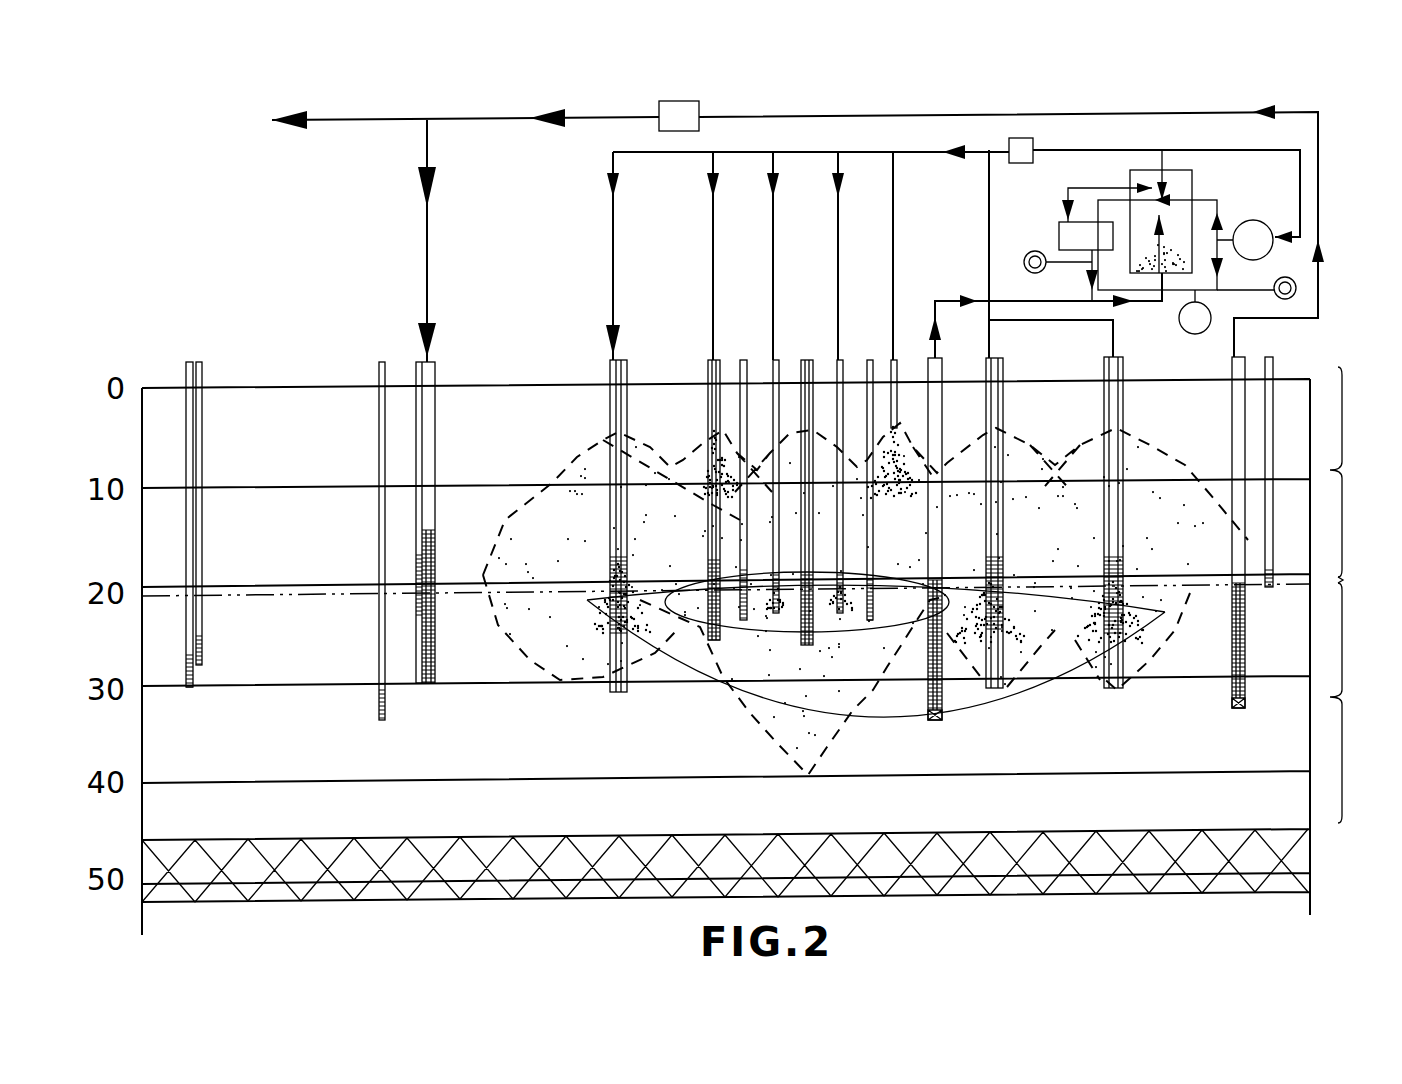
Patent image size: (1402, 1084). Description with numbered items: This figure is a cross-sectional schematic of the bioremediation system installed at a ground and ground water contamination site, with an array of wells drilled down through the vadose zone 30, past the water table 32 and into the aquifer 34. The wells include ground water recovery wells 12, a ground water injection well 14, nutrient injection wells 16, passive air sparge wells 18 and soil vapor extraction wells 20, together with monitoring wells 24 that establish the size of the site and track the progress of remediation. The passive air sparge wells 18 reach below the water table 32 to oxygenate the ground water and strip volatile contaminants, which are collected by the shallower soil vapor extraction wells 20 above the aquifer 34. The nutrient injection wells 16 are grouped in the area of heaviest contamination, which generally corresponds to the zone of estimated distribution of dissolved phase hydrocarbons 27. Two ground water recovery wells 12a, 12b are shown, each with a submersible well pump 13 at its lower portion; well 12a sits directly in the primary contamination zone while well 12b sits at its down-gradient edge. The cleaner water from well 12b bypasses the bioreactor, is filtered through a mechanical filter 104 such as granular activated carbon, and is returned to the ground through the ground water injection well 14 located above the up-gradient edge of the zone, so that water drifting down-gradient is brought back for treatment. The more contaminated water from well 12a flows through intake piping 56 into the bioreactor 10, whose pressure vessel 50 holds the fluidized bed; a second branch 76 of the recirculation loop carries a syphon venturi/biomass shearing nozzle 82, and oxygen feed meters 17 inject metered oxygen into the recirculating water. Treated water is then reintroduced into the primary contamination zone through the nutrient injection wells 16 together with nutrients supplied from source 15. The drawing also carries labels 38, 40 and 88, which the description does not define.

The bioreactor 10 is at (1341, 148).
The ground water recovery well 12 is at (1153, 461).
The ground water recovery well 12a is at (926, 358).
The ground water recovery well 12b is at (1247, 357).
The well pump 13 is at (935, 722).
The ground water injection well 14 is at (436, 375).
The nutrient source 15 is at (1207, 333).
The nutrient injection well 16 is at (708, 365).
The oxygen feed meter 17 is at (1028, 255).
The passive air sparge well 18 is at (619, 358).
The soil vapor extraction well 20 is at (624, 358).
The monitoring well 24 is at (186, 375).
The zone of estimated distribution of dissolved phase hydrocarbons 27 is at (1016, 729).
The vadose zone 30 is at (1361, 472).
The water table 32 is at (1292, 586).
The aquifer 34 is at (1361, 703).
The treatment zone 38 is at (560, 475).
The treatment region 40 is at (727, 690).
The pressure vessel 50 is at (1192, 190).
The intake piping 56 is at (1003, 300).
The second branch 76 is at (1217, 201).
The syphon venturi/biomass shearing nozzle 82 is at (1062, 222).
The valve 88 is at (1030, 138).
The mechanical filter 104 is at (659, 118).